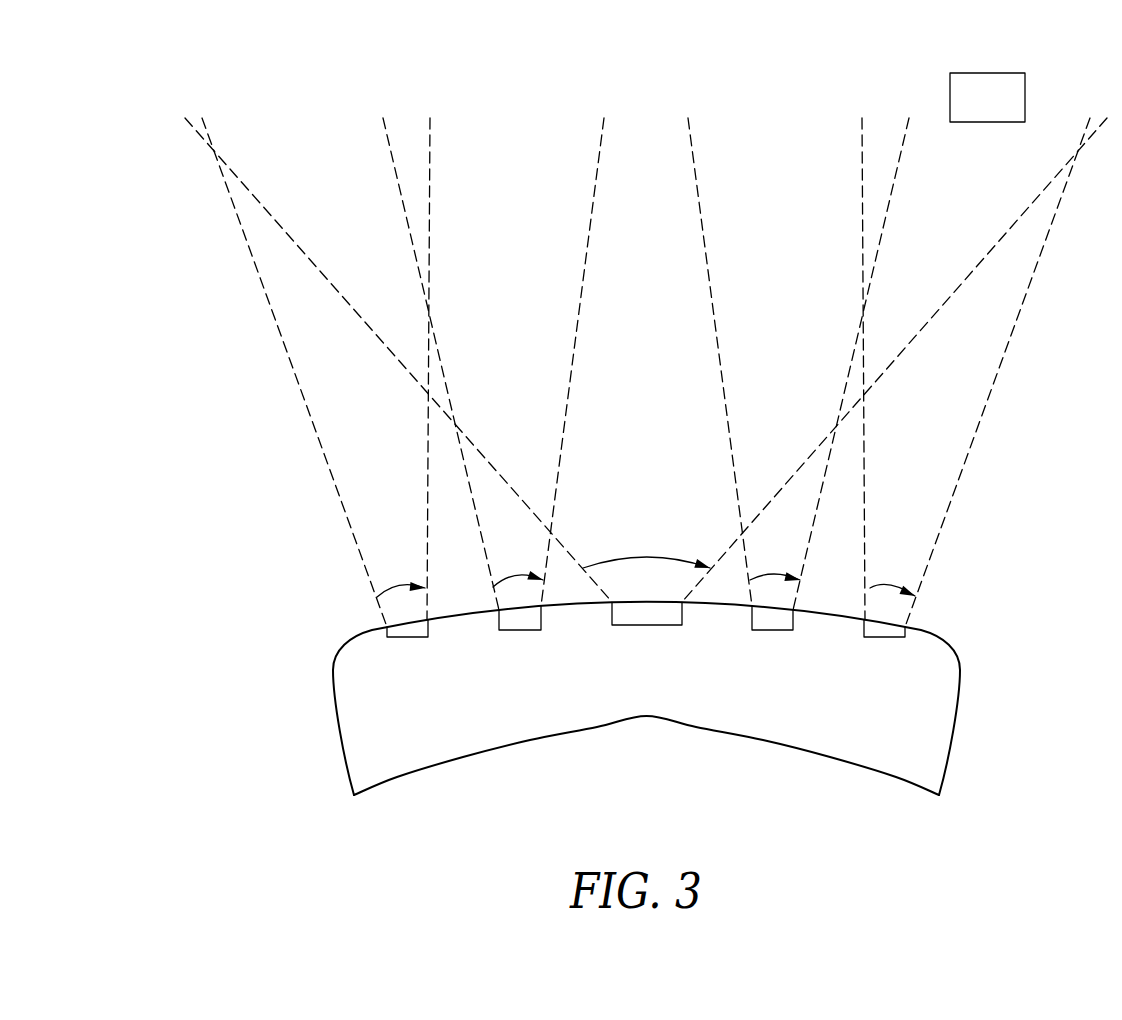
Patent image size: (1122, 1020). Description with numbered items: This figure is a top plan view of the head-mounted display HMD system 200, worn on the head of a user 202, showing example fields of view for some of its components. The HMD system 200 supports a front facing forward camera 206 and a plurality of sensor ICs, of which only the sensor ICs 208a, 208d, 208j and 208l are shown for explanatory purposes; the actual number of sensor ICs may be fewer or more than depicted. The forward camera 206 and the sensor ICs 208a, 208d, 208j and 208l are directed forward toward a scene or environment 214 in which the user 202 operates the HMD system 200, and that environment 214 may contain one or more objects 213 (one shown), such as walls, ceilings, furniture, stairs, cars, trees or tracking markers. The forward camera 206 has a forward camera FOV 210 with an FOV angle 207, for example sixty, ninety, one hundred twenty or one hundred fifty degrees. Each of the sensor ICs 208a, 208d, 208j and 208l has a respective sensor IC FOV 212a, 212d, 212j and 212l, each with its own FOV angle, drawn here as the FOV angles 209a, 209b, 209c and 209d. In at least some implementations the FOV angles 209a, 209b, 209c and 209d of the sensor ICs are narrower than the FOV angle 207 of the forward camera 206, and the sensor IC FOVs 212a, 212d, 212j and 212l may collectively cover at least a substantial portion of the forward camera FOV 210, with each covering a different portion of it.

The HMD system 200 is at (653, 402).
The user 202 is at (952, 645).
The forward camera 206 is at (647, 625).
The FOV angle 207 is at (647, 557).
The sensor IC 208a is at (408, 637).
The sensor IC 208d is at (521, 630).
The sensor IC 208j is at (773, 630).
The sensor IC 208l is at (885, 637).
The FOV angle 209a is at (395, 587).
The field of view angle 209b is at (507, 573).
The field of view angle 209c is at (772, 573).
The FOV angle 209d is at (885, 585).
The forward camera FOV 210 is at (897, 357).
The sensor IC FOV 212a is at (293, 372).
The sensor IC FOV 212d is at (428, 225).
The sensor IC FOV 212j is at (720, 360).
The sensor IC FOV 212l is at (1000, 370).
The object 213 is at (1013, 111).
The environment 214 is at (923, 38).